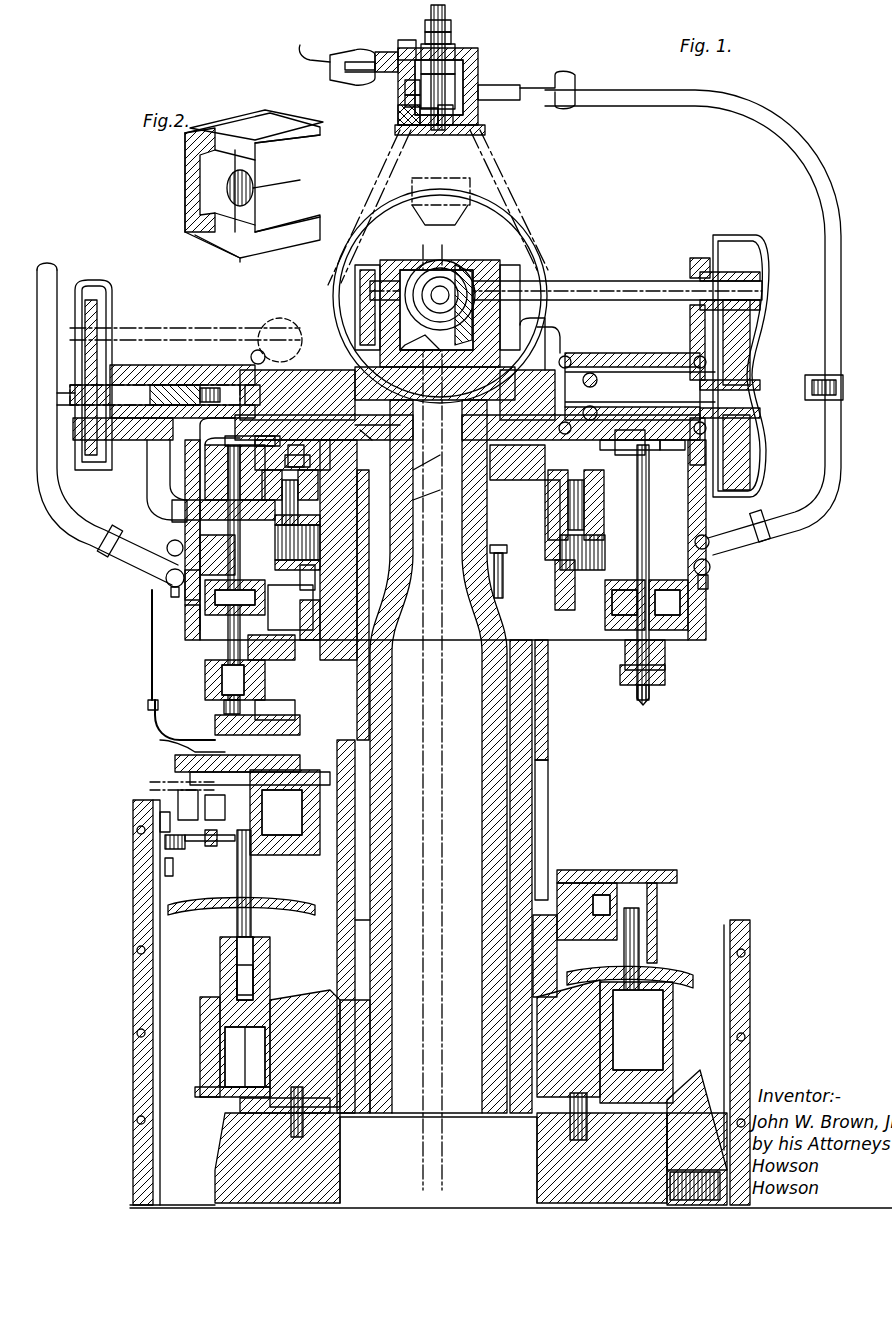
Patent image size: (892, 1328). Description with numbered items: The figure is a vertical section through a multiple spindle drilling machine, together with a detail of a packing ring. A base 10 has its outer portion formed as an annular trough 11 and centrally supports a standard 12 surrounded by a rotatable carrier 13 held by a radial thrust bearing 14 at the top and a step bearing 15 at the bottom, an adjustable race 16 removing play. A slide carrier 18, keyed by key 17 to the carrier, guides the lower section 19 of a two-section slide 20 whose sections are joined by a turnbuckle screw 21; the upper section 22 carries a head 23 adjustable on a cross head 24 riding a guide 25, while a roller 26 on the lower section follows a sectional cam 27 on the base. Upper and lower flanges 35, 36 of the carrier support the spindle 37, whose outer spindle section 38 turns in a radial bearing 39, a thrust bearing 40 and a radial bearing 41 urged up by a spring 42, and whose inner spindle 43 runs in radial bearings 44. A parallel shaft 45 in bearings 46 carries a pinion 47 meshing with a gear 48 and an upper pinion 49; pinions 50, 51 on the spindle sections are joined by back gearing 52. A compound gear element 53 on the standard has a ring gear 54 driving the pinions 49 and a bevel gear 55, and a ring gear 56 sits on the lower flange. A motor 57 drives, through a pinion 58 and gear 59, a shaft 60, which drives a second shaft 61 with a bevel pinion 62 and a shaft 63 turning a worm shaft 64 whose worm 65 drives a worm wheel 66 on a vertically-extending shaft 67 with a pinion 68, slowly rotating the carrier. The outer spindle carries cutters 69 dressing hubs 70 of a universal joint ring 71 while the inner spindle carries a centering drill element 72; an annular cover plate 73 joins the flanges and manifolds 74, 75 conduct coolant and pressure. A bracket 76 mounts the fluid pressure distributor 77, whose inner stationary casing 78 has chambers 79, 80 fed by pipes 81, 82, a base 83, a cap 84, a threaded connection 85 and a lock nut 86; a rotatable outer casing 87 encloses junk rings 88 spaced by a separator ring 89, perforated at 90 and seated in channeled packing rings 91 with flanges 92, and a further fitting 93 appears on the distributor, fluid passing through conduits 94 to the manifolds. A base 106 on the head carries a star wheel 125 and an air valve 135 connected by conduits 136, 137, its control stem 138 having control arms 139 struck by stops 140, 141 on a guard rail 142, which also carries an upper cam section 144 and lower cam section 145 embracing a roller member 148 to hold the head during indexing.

In FIG. 1, the base 10 is at (520, 1200).
In FIG. 1, the annular trough 11 is at (640, 1180).
In FIG. 1, the standard 12 is at (512, 830).
In FIG. 1, the rotatable carrier 13 is at (540, 785).
In FIG. 1, the radial thrust bearing 14 is at (500, 565).
In FIG. 1, the step bearing 15 is at (560, 1090).
In FIG. 1, the adjustable race 16 is at (560, 620).
In FIG. 1, the key 17 is at (340, 1015).
In FIG. 1, the slide carrier 18 is at (305, 990).
In FIG. 1, the lower section of slide 19 is at (270, 960).
In FIG. 1, the two-section slide 20 is at (220, 968).
In FIG. 1, the turnbuckle screw 21 is at (240, 905).
In FIG. 1, the upper section of slide 22 is at (240, 900).
In FIG. 1, the head 23 is at (310, 855).
In FIG. 1, the cross head 24 is at (355, 800).
In FIG. 1, the guide 25 is at (358, 925).
In FIG. 1, the roller 26 is at (200, 1050).
In FIG. 1, the cam 27 is at (291, 1110).
In FIG. 1, the upper flange 35 is at (298, 520).
In FIG. 1, the lower flange 36 is at (315, 575).
In FIG. 1, the spindle 37 is at (205, 655).
In FIG. 1, the outer spindle section 38 is at (228, 655).
In FIG. 1, the radial bearing 39 is at (205, 622).
In FIG. 1, the thrust bearing 40 is at (268, 612).
In FIG. 1, the radial bearing 41 is at (270, 470).
In FIG. 1, the spring 42 is at (220, 550).
In FIG. 1, the inner spindle 43 is at (215, 680).
In FIG. 1, the radial bearings 44 is at (272, 660).
In FIG. 1, the shaft 45 is at (318, 498).
In FIG. 1, the bearings 46 is at (305, 470).
In FIG. 1, the pinion 47 is at (320, 548).
In FIG. 1, the gear 48 is at (185, 575).
In FIG. 1, the pinion 49 is at (305, 450).
In FIG. 1, the pinion 50 is at (650, 440).
In FIG. 1, the pinion 51 is at (680, 455).
In FIG. 1, the back gearing 52 is at (600, 415).
In FIG. 1, the compound gear element 53 is at (413, 480).
In FIG. 1, the ring gear 54 is at (413, 505).
In FIG. 1, the bevel gear 55 is at (612, 522).
In FIG. 1, the ring gear 56 is at (215, 446).
In FIG. 1, the motor 57 is at (500, 250).
In FIG. 1, the pinion 58 is at (420, 275).
In FIG. 1, the gear 59 is at (480, 250).
In FIG. 1, the shaft 60 is at (640, 281).
In FIG. 1, the second shaft 61 is at (620, 367).
In FIG. 1, the bevel pinion 62 is at (560, 340).
In FIG. 1, the shaft 63 is at (262, 345).
In FIG. 1, the worm shaft 64 is at (215, 385).
In FIG. 1, the worm 65 is at (175, 385).
In FIG. 1, the worm wheel 66 is at (205, 385).
In FIG. 1, the vertically-extending shaft 67 is at (170, 468).
In FIG. 1, the pinion 68 is at (172, 500).
In FIG. 1, the cutters 69 is at (225, 725).
In FIG. 1, the hubs 70 is at (255, 720).
In FIG. 1, the universal joint ring 71 is at (155, 720).
In FIG. 1, the countersinking centering drill element 72 is at (222, 702).
In FIG. 1, the annular cover plate 73 is at (706, 606).
In FIG. 1, the manifold 74 is at (170, 545).
In FIG. 1, the manifold 75 is at (168, 582).
In FIG. 1, the bracket 76 is at (500, 158).
In FIG. 1, the fluid pressure distributor 77 is at (480, 72).
In FIG. 1, the inner stationary casing 78 is at (445, 125).
In FIG. 1, the upper chamber 79 is at (455, 55).
In FIG. 1, the lower chamber 80 is at (432, 135).
In FIG. 1, the delivery pipe 81 is at (405, 40).
In FIG. 1, the delivery pipe 82 is at (446, 15).
In FIG. 1, the base 83 is at (398, 115).
In FIG. 1, the cap 84 is at (451, 40).
In FIG. 1, the threaded connection 85 is at (425, 125).
In FIG. 1, the lock nut 86 is at (451, 28).
In FIG. 1, the outer casing 87 is at (460, 85).
In FIG. 2, the junk rings 88 is at (200, 190).
In FIG. 1, the junk rings 88 is at (405, 102).
In FIG. 1, the separator ring 89 is at (405, 90).
In FIG. 2, the perforations 90 is at (253, 190).
In FIG. 1, the perforations 90 is at (478, 115).
In FIG. 2, the channeled packing ring 91 is at (210, 240).
In FIG. 2, the flanges 92 is at (190, 140).
In FIG. 1, the inlet 93 is at (385, 55).
In FIG. 1, the conduit 94 is at (330, 62).
In FIG. 1, the base 106 is at (190, 775).
In FIG. 1, the star wheel 125 is at (160, 741).
In FIG. 1, the air valve 135 is at (175, 765).
In FIG. 1, the conduit 136 is at (150, 688).
In FIG. 1, the conduit 137 is at (405, 720).
In FIG. 1, the control stem 138 is at (215, 812).
In FIG. 1, the control arms 139 is at (180, 810).
In FIG. 1, the operating stop 140 is at (150, 786).
In FIG. 1, the operating stop 141 is at (162, 825).
In FIG. 1, the guard rail 142 is at (133, 990).
In FIG. 1, the upper cam section 144 is at (170, 845).
In FIG. 1, the lower cam section 145 is at (170, 876).
In FIG. 1, the roller member 148 is at (210, 846).